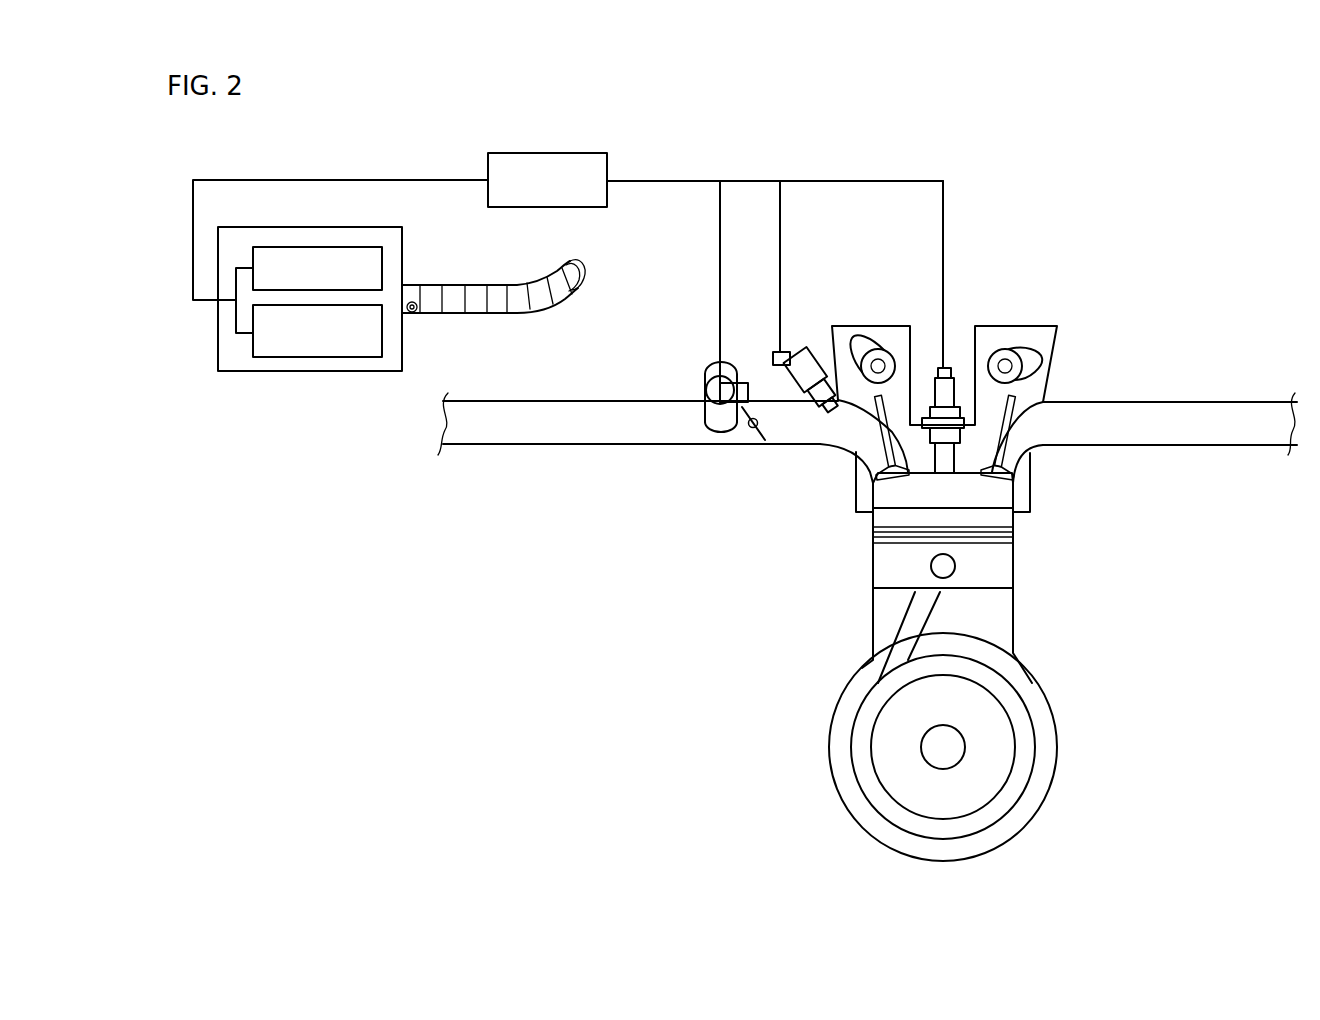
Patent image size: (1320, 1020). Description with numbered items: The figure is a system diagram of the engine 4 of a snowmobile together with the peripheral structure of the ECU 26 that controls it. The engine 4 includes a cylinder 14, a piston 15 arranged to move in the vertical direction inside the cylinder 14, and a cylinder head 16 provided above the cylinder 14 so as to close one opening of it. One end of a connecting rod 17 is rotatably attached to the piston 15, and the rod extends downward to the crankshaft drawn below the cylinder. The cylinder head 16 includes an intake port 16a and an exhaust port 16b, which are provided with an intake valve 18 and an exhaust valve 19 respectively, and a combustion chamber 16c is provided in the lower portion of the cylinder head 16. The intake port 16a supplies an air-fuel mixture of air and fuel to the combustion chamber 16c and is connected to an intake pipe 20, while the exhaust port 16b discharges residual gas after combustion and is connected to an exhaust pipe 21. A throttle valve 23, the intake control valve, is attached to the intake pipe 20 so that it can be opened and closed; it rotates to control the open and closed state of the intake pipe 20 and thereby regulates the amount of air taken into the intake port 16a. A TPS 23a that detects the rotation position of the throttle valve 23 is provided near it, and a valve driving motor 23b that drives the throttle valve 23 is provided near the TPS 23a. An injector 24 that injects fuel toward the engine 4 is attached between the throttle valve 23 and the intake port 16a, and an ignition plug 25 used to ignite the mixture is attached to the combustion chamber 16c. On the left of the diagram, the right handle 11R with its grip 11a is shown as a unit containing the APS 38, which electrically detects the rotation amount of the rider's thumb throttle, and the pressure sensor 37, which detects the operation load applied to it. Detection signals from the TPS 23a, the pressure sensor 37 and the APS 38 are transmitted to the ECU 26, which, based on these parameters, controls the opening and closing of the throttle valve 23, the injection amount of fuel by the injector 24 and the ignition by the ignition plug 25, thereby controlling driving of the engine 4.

The engine 4 is at (1070, 310).
The right handle 11R is at (262, 406).
The grip 11a is at (494, 305).
The cylinder 14 is at (1015, 548).
The piston 15 is at (890, 557).
The cylinder head 16 is at (963, 472).
The intake port 16a is at (853, 448).
The exhaust port 16b is at (1042, 447).
The combustion chamber 16c is at (993, 492).
The connecting rod 17 is at (903, 641).
The intake valve 18 is at (876, 393).
The exhaust valve 19 is at (1010, 394).
The intake pipe 20 is at (652, 400).
The exhaust pipe 21 is at (1153, 402).
The throttle valve 23 is at (760, 380).
The TPS (throttle position sensor) 23a is at (700, 395).
The valve driving motor 23b is at (710, 368).
The injector 24 is at (800, 352).
The ignition plug 25 is at (937, 365).
The ECU (engine control unit) 26 is at (607, 163).
The pressure sensor 37 is at (314, 357).
The APS (accelerator position sensor) 38 is at (317, 247).